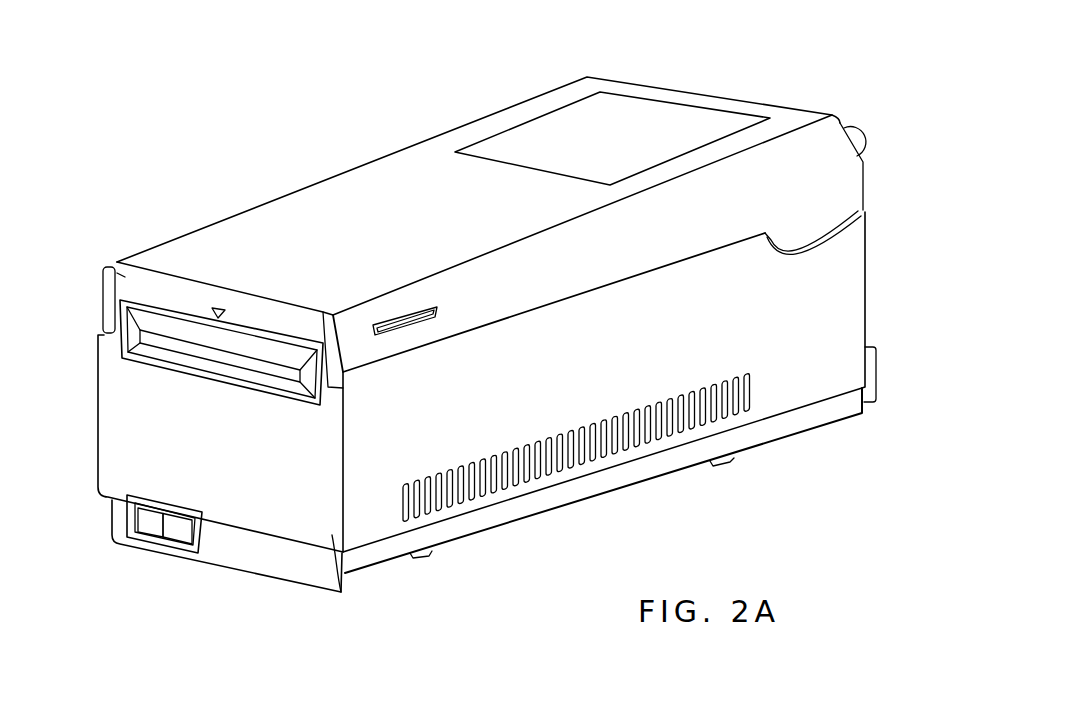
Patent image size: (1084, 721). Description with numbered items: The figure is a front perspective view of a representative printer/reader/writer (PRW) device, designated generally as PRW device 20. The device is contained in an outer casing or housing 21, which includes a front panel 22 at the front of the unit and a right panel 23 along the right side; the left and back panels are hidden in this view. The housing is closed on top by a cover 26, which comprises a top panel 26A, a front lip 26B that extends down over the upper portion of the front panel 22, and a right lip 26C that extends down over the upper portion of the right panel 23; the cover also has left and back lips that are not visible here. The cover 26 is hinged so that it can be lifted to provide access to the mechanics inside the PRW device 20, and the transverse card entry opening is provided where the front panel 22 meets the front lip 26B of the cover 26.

The PRW device 20 is at (689, 58).
The outer casing or housing 21 is at (867, 233).
The front panel 22 is at (323, 580).
The right panel 23 is at (797, 393).
The cover 26 is at (323, 160).
The top panel 26A is at (428, 160).
The front lip 26B is at (104, 266).
The right lip 26C is at (500, 270).